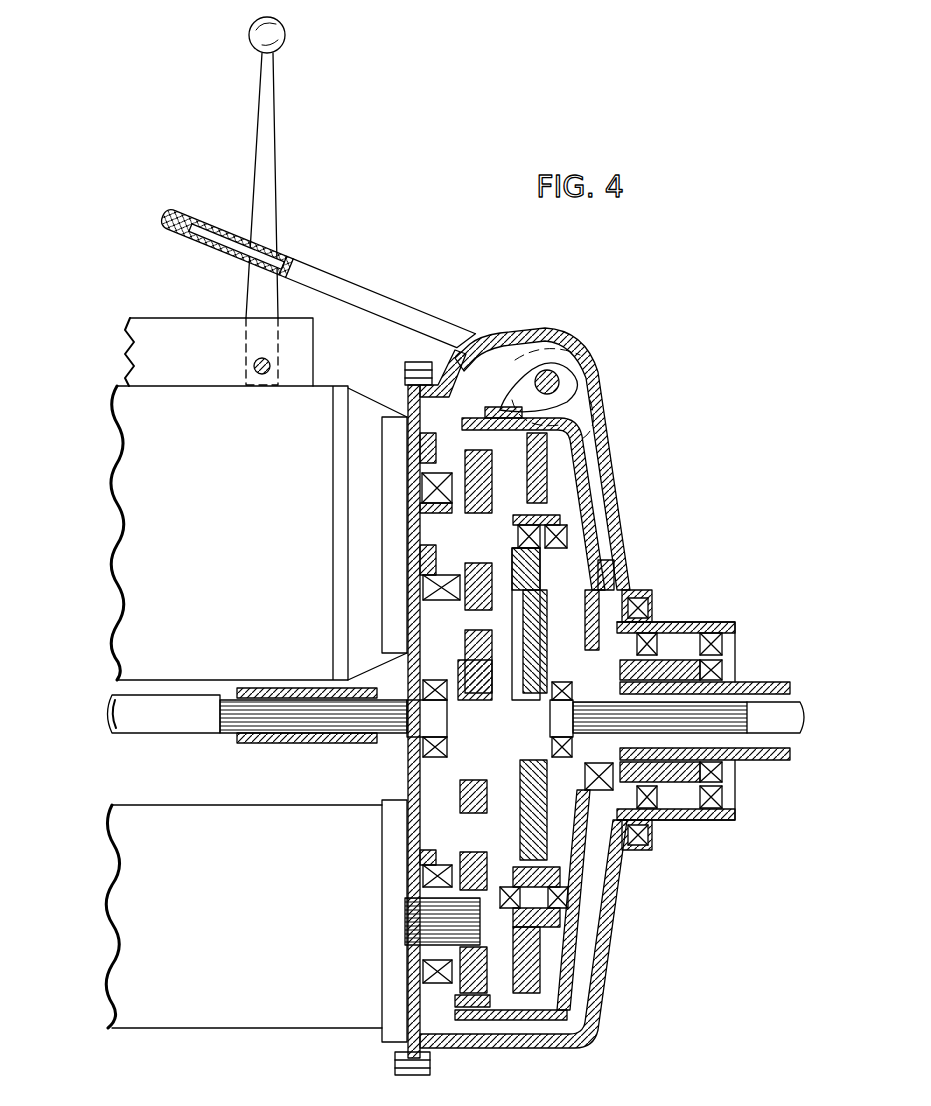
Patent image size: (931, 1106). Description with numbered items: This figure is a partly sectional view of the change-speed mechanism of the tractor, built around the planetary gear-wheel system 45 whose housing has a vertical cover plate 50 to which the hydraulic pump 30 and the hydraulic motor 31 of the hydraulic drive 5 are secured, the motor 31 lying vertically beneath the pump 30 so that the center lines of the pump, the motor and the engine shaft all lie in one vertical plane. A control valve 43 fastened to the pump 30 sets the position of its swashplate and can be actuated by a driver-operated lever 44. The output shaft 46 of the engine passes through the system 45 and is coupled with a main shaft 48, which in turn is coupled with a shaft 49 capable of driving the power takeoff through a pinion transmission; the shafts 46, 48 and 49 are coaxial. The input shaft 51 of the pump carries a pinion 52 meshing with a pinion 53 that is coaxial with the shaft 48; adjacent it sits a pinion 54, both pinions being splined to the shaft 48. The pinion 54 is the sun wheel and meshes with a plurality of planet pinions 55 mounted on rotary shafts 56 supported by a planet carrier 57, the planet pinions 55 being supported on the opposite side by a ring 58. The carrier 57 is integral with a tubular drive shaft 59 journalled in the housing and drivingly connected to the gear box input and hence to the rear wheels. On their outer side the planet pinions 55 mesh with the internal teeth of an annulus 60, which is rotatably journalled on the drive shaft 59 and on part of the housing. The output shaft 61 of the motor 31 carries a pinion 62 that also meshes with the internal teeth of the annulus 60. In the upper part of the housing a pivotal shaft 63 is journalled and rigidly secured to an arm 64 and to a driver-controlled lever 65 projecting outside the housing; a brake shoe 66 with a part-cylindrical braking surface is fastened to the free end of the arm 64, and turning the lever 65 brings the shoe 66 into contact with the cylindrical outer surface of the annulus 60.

The hydraulic drive 5 is at (256, 791).
The hydraulic pump 30 is at (180, 386).
The hydraulic motor 31 is at (204, 1028).
The control valve 43 is at (192, 318).
The lever 44 is at (281, 140).
The planetary gear-wheel system 45 is at (610, 1003).
The output shaft 46 is at (152, 731).
The main shaft 48 is at (645, 705).
The shaft 49 is at (762, 762).
The cover plate 50 is at (408, 778).
The input shaft 51 is at (415, 530).
The pinion 52 is at (492, 480).
The pinion 53 is at (463, 797).
The pinion 54 is at (618, 583).
The planet pinions 55 is at (548, 457).
The rotary shafts 56 is at (572, 512).
The planet carrier 57 is at (600, 548).
The ring 58 is at (516, 525).
The tubular drive shaft 59 is at (755, 682).
The annulus 60 is at (588, 420).
The output shaft 61 is at (408, 912).
The pinion 62 is at (472, 1002).
The pivotal shaft 63 is at (562, 381).
The arm 64 is at (551, 366).
The lever 65 is at (357, 292).
The brake shoe 66 is at (500, 405).